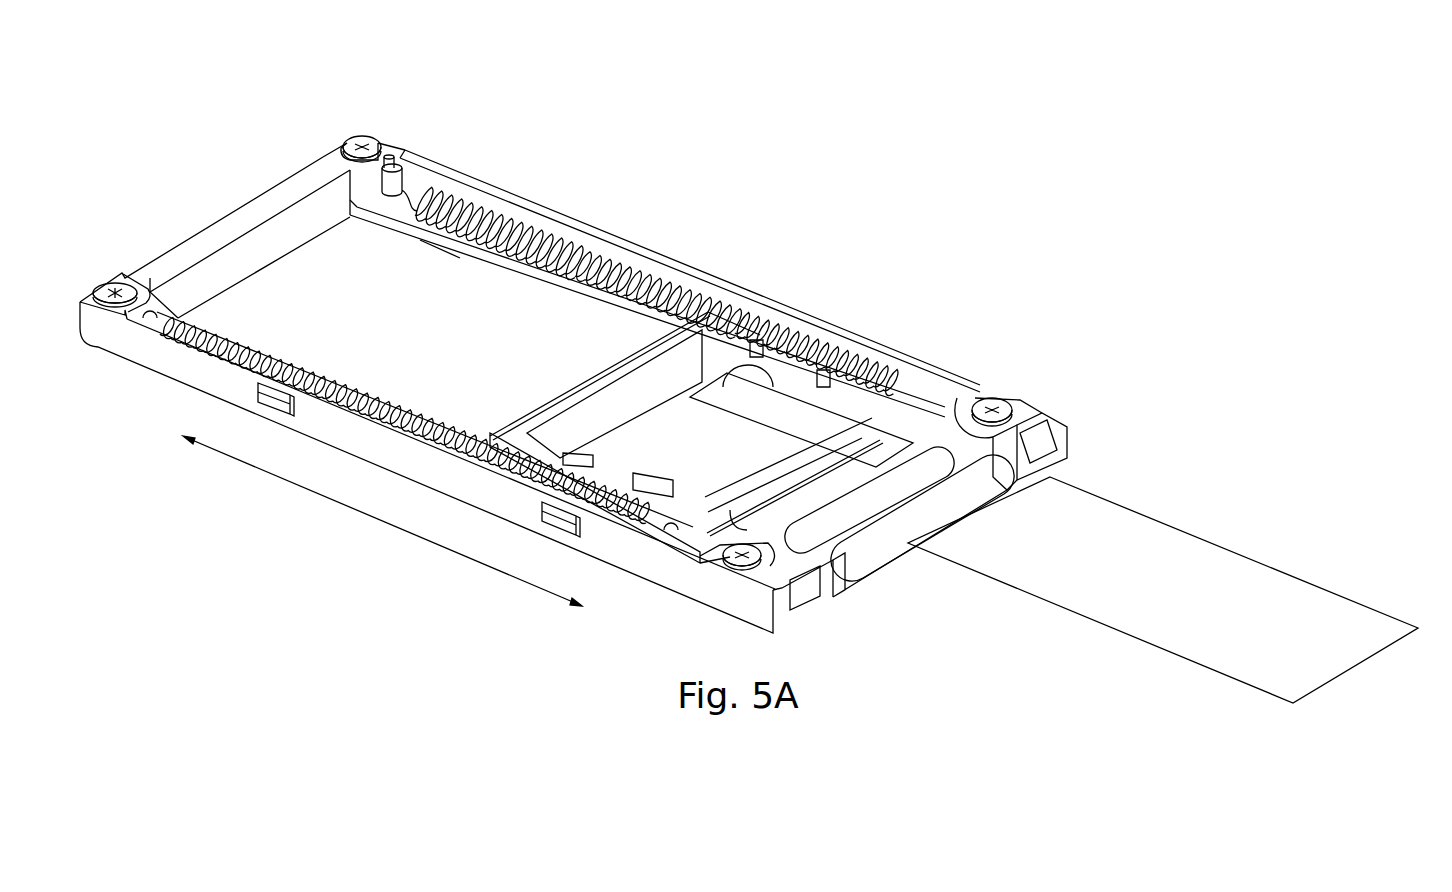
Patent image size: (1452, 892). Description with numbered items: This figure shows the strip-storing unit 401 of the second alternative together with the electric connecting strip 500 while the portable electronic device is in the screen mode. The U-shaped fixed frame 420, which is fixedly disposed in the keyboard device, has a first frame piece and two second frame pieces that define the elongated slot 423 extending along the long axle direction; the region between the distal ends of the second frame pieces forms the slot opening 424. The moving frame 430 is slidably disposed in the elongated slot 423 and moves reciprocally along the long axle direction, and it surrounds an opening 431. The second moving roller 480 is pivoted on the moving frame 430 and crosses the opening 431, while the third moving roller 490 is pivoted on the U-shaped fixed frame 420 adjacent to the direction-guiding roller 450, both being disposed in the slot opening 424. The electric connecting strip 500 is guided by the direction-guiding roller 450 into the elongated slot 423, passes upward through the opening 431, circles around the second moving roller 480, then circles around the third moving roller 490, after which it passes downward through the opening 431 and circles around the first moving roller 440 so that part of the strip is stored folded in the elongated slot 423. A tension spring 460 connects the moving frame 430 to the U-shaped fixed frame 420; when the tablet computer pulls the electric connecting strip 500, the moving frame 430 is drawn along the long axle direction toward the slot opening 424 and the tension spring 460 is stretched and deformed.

The strip-storing unit 401 is at (342, 126).
The U-shaped fixed frame 420 is at (215, 205).
The elongated slot 423 is at (440, 268).
The slot opening 424 is at (834, 597).
The moving frame 430 is at (778, 341).
The opening 431 is at (702, 379).
The first moving roller 440 is at (757, 375).
The direction-guiding roller 450 is at (845, 556).
The tension spring 460 is at (661, 279).
The second moving roller 480 is at (941, 452).
The third moving roller 490 is at (963, 417).
The electric connecting strip 500 is at (1120, 503).